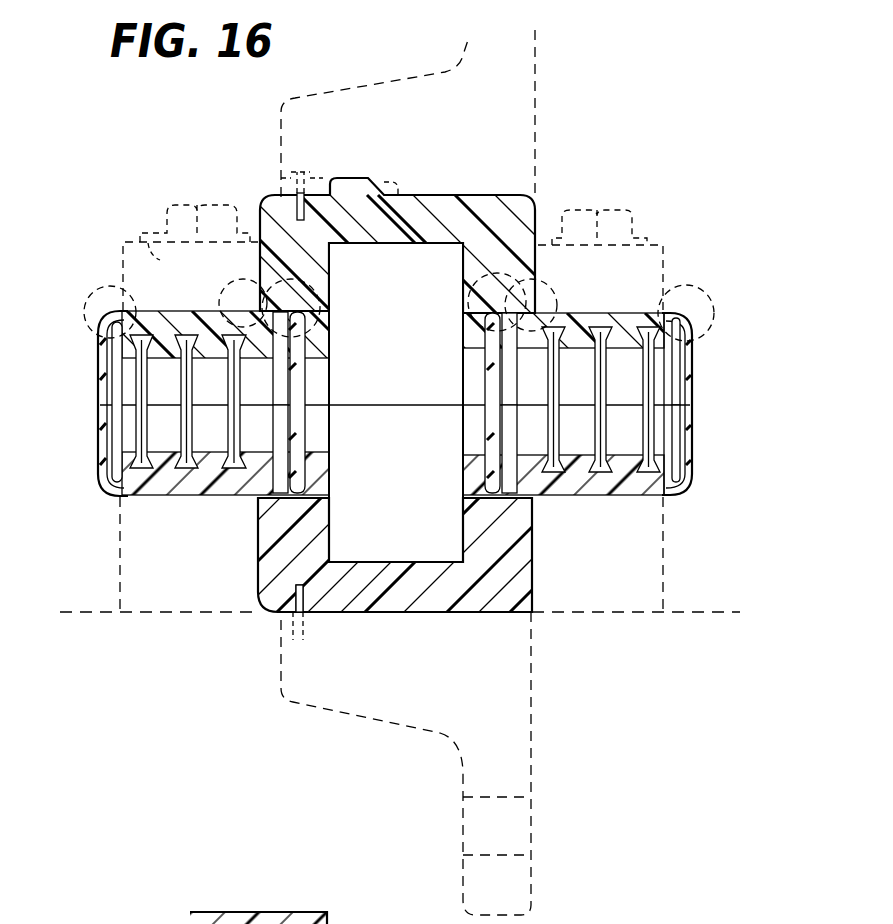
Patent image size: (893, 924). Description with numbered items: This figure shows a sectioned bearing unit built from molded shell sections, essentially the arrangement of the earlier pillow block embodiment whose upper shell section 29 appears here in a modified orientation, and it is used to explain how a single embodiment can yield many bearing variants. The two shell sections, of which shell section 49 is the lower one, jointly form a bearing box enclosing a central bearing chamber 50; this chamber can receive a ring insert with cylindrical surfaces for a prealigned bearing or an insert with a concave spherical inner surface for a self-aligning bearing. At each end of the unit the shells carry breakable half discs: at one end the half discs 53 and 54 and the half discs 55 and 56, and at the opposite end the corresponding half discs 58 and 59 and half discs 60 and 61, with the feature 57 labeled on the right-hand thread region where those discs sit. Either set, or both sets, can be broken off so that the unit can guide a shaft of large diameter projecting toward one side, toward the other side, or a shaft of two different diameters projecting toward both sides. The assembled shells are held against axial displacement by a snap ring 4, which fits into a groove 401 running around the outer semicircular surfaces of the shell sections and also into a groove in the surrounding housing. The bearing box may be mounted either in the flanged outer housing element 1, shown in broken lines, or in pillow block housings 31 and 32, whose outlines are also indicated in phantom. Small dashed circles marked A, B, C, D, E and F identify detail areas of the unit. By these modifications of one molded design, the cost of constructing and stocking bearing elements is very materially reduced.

The outer housing element 1 is at (516, 100).
The snap ring 4 is at (297, 603).
The upper shell section 29 is at (140, 338).
The pillow block housing 31 is at (143, 216).
The pillow block housing 32 is at (634, 265).
The shell section 49 is at (268, 533).
The bearing chamber 50 is at (407, 263).
The half disc 53 is at (100, 374).
The half disc 54 is at (102, 428).
The half disc 55 is at (292, 374).
The half disc 56 is at (292, 477).
The thread 57 is at (572, 340).
The half disc 58 is at (498, 380).
The half disc 59 is at (498, 420).
The half disc 60 is at (690, 372).
The half disc 61 is at (690, 445).
The groove 401 is at (273, 665).
The detail area A is at (100, 285).
The detail area B is at (324, 290).
The detail area C is at (546, 280).
The detail area D is at (470, 283).
The detail area E is at (702, 285).
The detail area F is at (242, 283).